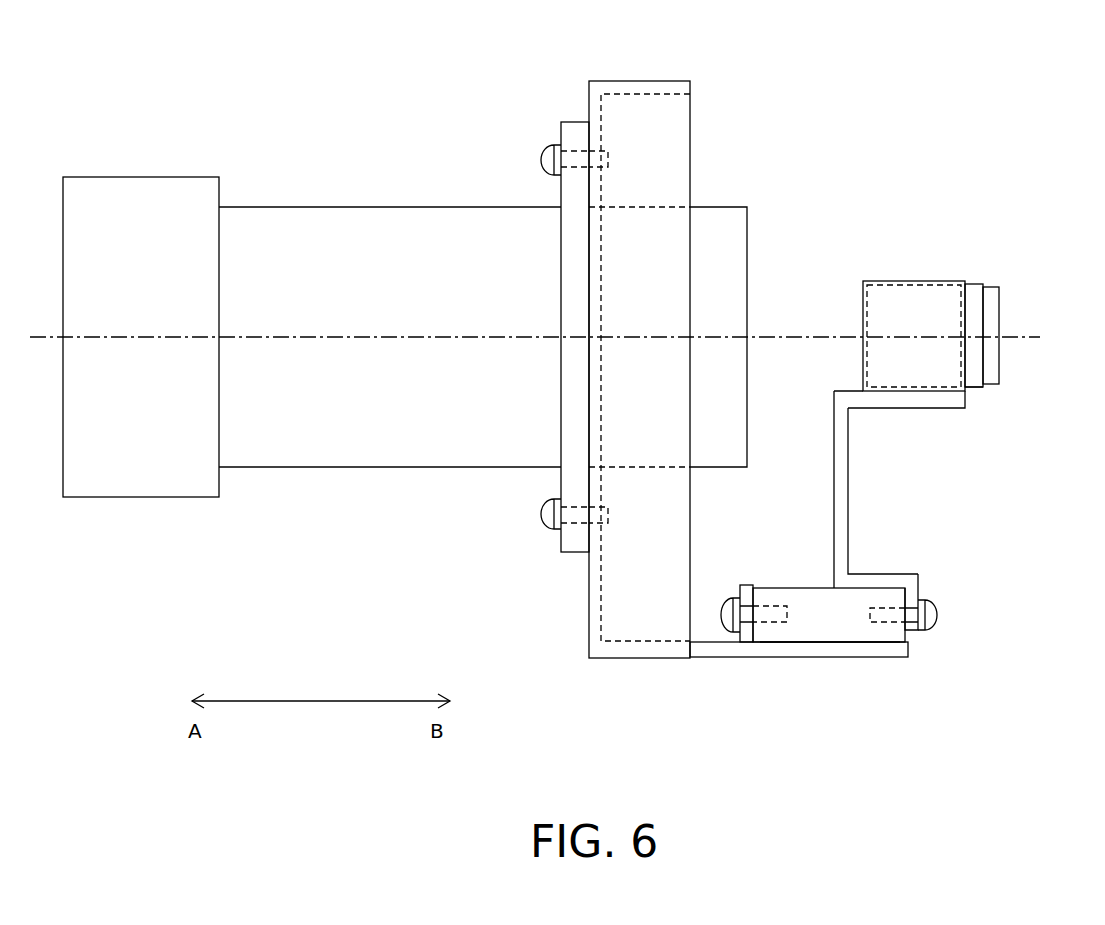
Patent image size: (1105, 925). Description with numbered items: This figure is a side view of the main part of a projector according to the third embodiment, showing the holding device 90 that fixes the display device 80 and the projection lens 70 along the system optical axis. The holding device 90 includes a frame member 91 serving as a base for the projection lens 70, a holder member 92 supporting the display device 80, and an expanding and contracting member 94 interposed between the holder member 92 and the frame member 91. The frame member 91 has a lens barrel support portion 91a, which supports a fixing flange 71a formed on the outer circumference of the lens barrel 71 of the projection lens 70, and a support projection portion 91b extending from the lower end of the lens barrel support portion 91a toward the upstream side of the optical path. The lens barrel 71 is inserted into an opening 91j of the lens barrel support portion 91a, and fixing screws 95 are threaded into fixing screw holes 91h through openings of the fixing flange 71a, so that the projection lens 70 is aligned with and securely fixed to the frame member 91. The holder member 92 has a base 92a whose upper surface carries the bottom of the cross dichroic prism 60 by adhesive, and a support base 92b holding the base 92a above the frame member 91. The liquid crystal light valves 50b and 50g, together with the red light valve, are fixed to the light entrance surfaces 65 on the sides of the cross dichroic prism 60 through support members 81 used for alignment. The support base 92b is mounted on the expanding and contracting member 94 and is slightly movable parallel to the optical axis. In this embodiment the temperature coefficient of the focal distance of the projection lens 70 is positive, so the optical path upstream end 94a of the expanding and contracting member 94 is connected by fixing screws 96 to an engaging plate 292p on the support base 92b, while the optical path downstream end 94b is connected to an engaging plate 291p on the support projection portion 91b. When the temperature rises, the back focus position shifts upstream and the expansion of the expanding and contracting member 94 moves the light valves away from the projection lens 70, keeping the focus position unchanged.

The projection lens 70 is at (277, 160).
The lens barrel 71 is at (378, 207).
The fixing flange 71a is at (577, 122).
The holding device 90 is at (739, 393).
The frame member 91 is at (683, 386).
The lens barrel support portion 91a is at (642, 88).
The support projection portion 91b is at (768, 650).
The fixing screw holes 91h is at (608, 160).
The opening 91j is at (550, 146).
The fixing screws 95 is at (542, 165).
The expanding and contracting member 94 is at (840, 626).
The optical path upstream end 94a is at (893, 632).
The optical path downstream end 94b is at (773, 602).
The pressing plate 291p is at (748, 590).
The engaging plate 292p is at (912, 587).
The holder member 92 is at (934, 510).
The base 92a is at (938, 400).
The support base 92b is at (848, 535).
The fixing screws 96 is at (735, 632).
The display device 80 is at (939, 294).
The cross dichroic prism 60 is at (923, 281).
The liquid crystal light valve 50b is at (893, 281).
The liquid crystal light valve 50g is at (1024, 305).
The light entrance surfaces 65 is at (965, 362).
The support members 81 is at (978, 392).